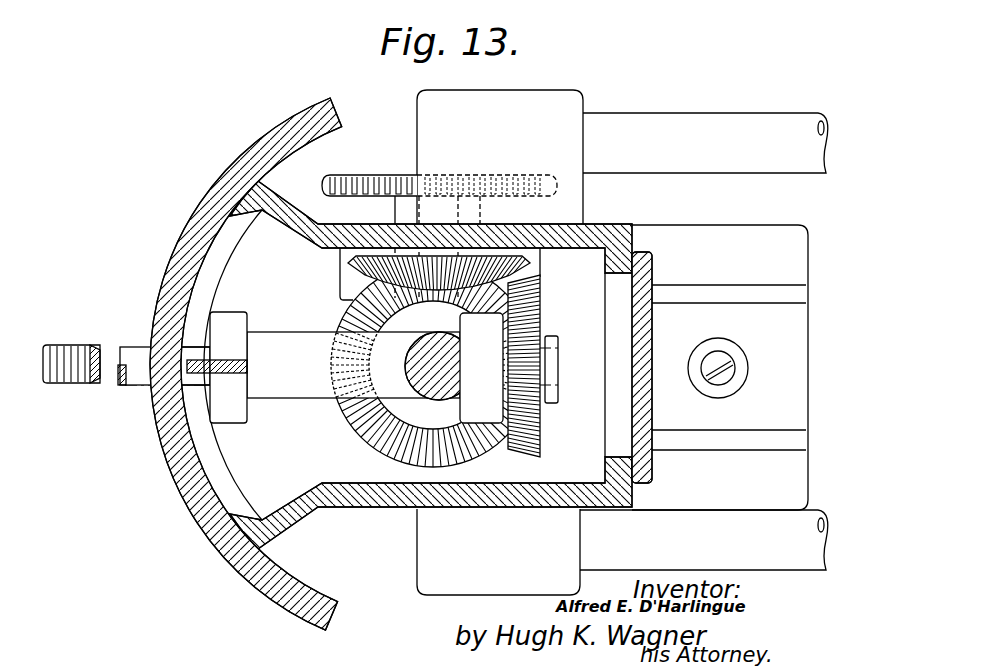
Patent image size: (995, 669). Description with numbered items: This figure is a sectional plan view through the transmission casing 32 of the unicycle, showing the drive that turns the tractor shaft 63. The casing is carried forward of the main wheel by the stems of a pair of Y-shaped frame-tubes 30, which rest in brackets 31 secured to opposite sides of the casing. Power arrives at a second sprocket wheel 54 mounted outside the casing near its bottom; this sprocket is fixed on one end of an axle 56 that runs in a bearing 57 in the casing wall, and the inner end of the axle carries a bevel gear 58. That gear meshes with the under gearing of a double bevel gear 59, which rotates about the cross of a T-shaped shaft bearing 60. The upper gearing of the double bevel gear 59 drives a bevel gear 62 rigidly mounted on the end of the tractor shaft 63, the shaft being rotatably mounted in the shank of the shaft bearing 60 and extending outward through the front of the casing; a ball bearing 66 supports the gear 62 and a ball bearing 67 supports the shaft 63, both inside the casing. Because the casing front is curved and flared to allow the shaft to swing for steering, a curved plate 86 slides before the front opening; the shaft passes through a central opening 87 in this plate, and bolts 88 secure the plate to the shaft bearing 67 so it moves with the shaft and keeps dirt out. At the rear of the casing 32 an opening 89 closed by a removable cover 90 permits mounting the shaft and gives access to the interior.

The Y-shaped frame-tubes 30 is at (704, 341).
The brackets 31 is at (500, 342).
The transmission casing 32 is at (338, 510).
The second sprocket wheel 54 is at (369, 170).
The axle 56 is at (459, 207).
The bearing 57 is at (381, 158).
The bevel gear 58 is at (352, 269).
The double bevel gear 59 is at (357, 431).
The T-shaped shaft bearing 60 is at (401, 363).
The bevel gear 62 is at (537, 302).
The tractor shaft 63 is at (143, 373).
The ball bearing for gear 66 is at (489, 329).
The ball bearing for shaft 67 is at (225, 411).
The curved plate 86 is at (165, 276).
The central opening 87 is at (192, 322).
The bolts 88 is at (199, 359).
The opening 89 is at (619, 343).
The removable cover 90 is at (653, 410).